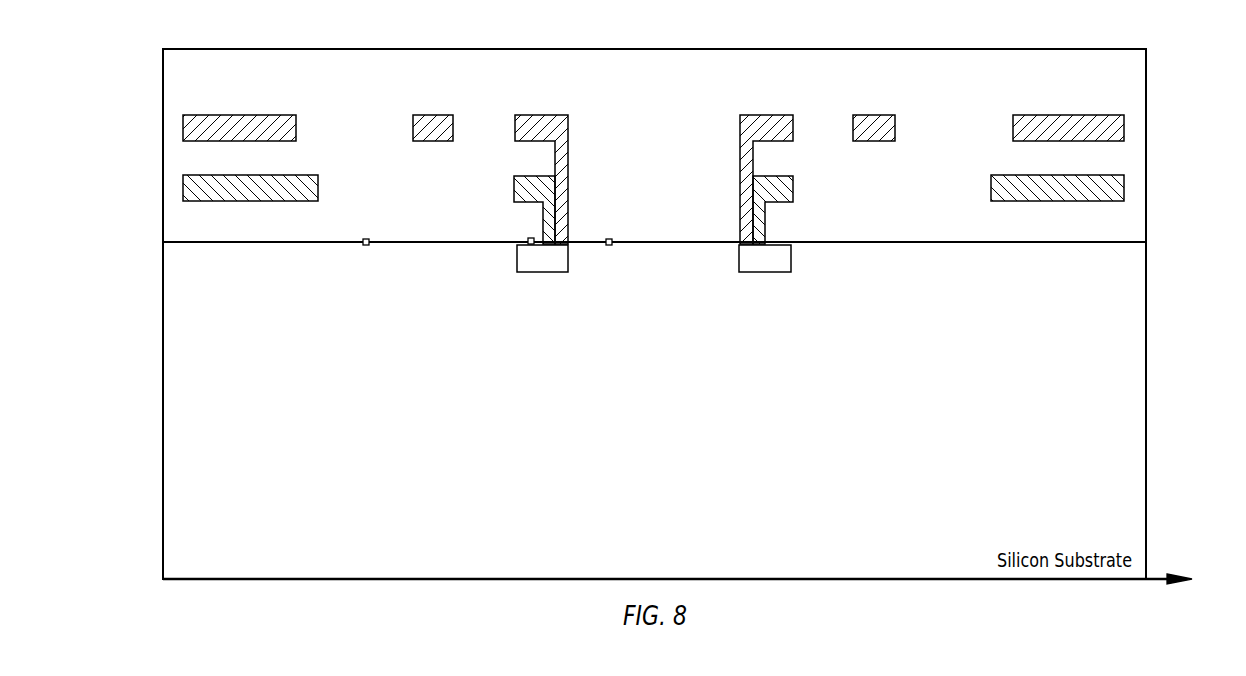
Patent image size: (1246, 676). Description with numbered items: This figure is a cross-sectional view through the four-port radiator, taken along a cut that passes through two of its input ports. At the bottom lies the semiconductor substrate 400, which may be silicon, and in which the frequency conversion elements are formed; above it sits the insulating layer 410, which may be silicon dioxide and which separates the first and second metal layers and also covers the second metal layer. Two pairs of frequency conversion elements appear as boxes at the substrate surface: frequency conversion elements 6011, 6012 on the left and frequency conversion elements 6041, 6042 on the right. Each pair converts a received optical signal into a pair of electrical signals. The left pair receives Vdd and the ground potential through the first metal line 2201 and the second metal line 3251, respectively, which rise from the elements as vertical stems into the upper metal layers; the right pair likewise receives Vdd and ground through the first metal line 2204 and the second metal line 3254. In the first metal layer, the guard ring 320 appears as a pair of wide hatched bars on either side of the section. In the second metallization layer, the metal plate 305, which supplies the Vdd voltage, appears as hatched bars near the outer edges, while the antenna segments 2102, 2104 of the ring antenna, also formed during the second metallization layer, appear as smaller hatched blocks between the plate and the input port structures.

The semiconductor substrate 400 is at (1147, 410).
The insulating layer 410 is at (1146, 161).
The metal plate 305 is at (240, 115).
The guard ring 320 is at (255, 201).
The antenna segment 2102 is at (433, 115).
The antenna segment 2104 is at (873, 115).
The first metal line 2201 is at (538, 115).
The first metal line 2204 is at (768, 115).
The second metal line 3251 is at (533, 176).
The second metal line 3254 is at (778, 176).
The frequency conversion element 6011 is at (530, 285).
The frequency conversion element 6012 is at (543, 273).
The frequency conversion element 6041 is at (777, 285).
The frequency conversion element 6042 is at (765, 273).